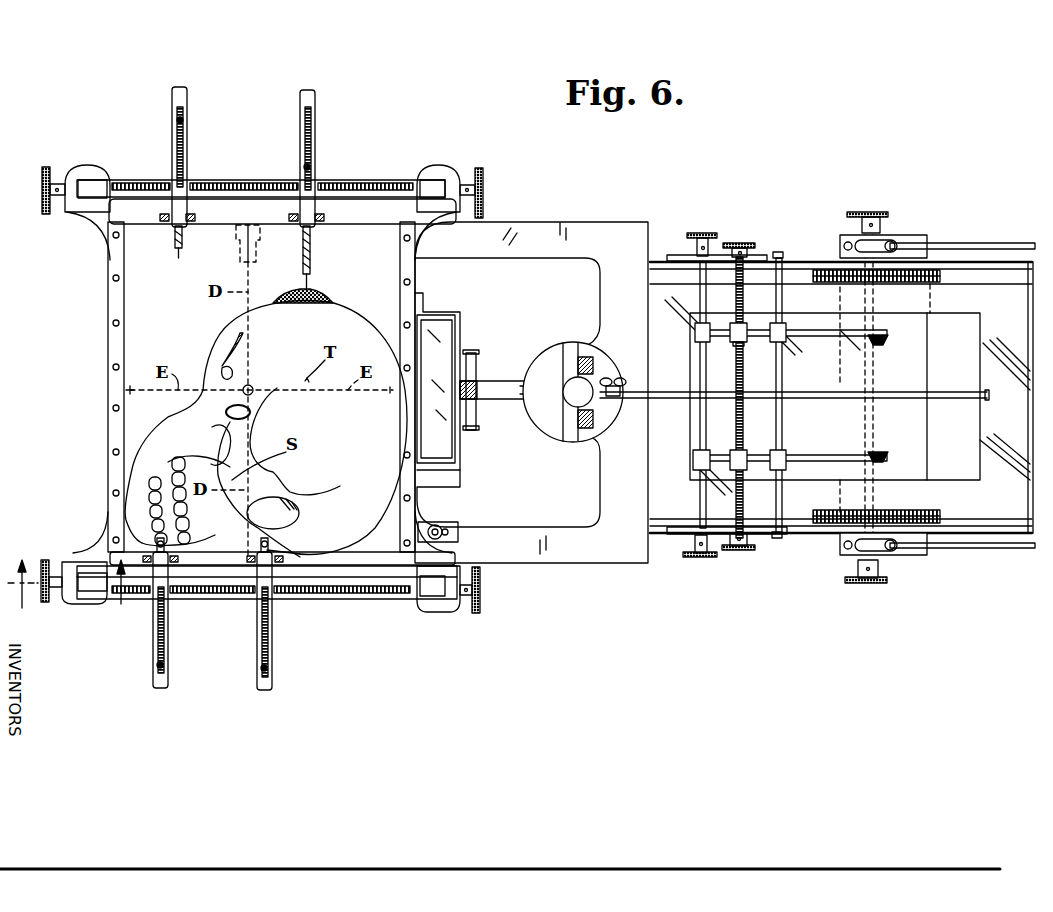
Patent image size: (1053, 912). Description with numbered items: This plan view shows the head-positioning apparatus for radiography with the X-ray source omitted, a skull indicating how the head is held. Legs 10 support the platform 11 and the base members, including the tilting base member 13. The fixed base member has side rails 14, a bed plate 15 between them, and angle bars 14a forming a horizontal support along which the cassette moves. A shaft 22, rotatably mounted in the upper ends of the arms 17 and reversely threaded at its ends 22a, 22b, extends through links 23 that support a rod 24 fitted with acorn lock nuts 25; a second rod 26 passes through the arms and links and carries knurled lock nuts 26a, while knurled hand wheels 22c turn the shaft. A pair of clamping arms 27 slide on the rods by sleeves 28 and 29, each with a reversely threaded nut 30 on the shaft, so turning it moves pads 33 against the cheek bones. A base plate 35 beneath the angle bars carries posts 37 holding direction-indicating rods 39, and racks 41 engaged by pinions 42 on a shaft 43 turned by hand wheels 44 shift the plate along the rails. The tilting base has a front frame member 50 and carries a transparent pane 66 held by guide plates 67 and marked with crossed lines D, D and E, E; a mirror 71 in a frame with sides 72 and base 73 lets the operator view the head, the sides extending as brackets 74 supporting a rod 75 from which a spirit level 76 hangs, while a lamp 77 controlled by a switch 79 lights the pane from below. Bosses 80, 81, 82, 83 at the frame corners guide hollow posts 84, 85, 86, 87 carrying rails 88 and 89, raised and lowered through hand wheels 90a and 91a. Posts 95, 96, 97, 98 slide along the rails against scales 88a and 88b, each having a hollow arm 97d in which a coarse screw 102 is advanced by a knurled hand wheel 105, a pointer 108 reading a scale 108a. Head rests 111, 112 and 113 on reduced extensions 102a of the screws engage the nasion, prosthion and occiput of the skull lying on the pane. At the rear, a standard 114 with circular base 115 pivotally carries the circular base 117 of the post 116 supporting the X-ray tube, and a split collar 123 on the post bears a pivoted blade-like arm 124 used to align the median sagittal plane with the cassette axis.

The legs 10 is at (68, 599).
The platform 11 is at (540, 222).
The tilting base member 13 is at (100, 422).
The side rails 14 is at (808, 262).
The angle bars 14a is at (966, 284).
The bed plate 15 is at (847, 398).
The arms 17 is at (680, 255).
The shaft 22 is at (736, 381).
The threaded end portion of shaft 22a is at (743, 305).
The threaded end portion of shaft 22b is at (743, 514).
The knurled hand wheels 22c is at (735, 243).
The links 23 is at (722, 266).
The rod 24 is at (782, 381).
The acorn lock nuts 25 is at (778, 252).
The rod 26 is at (700, 292).
The knurled lock nuts 26a is at (697, 233).
The clamping arms 27 is at (830, 337).
The sleeve 28 is at (695, 334).
The sleeve 29 is at (786, 330).
The reversely threaded nut 30 is at (735, 340).
The pad 33 is at (885, 341).
The base plate 35 is at (936, 366).
The post 37 is at (893, 244).
The direction-indicating rods 39 is at (985, 245).
The rack 41 is at (932, 306).
The pinions 42 is at (872, 284).
The shaft 43 is at (868, 395).
The knurled hand wheels 44 is at (880, 212).
The front frame member 50 is at (108, 302).
The pane 66 is at (266, 429).
The guide plates 67 is at (108, 345).
The mirror 71 is at (436, 389).
The sides of mirror frame 72 is at (440, 312).
The base of mirror frame 73 is at (462, 462).
The brackets 74 is at (478, 355).
The rod 75 is at (471, 350).
The spirit level 76 is at (477, 370).
The lamp 77 is at (242, 258).
The switch 79 is at (440, 524).
The boss 80 is at (95, 605).
The boss 81 is at (435, 613).
The boss 82 is at (97, 168).
The boss 83 is at (440, 170).
The hollow post 84 is at (76, 558).
The hollow post 85 is at (420, 602).
The hollow post 86 is at (80, 178).
The hollow post 87 is at (462, 172).
The rail 88 is at (330, 600).
The scale 88a is at (210, 600).
The scale 88b is at (128, 182).
The rail 89 is at (245, 196).
The knurled hand wheels 90a is at (46, 604).
The knurled hand wheels 91a is at (42, 180).
The post 95 is at (152, 600).
The post 96 is at (275, 600).
The post 97 is at (172, 186).
The hollow arm 97d is at (180, 87).
The post 98 is at (318, 186).
The coarse screw 102 is at (175, 240).
The reduced extension 102a is at (178, 258).
The knurled hand wheel 105 is at (196, 218).
The pointer 108 is at (177, 120).
The scale 108a is at (186, 126).
The head rest 111 is at (268, 542).
The head rest 112 is at (180, 545).
The head rest 113 is at (333, 299).
The standard 114 is at (555, 428).
The circular base 115 is at (570, 415).
The post 116 is at (520, 380).
The circular base 117 is at (590, 422).
The split collar 123 is at (560, 412).
The blade-like arm 124 is at (935, 399).